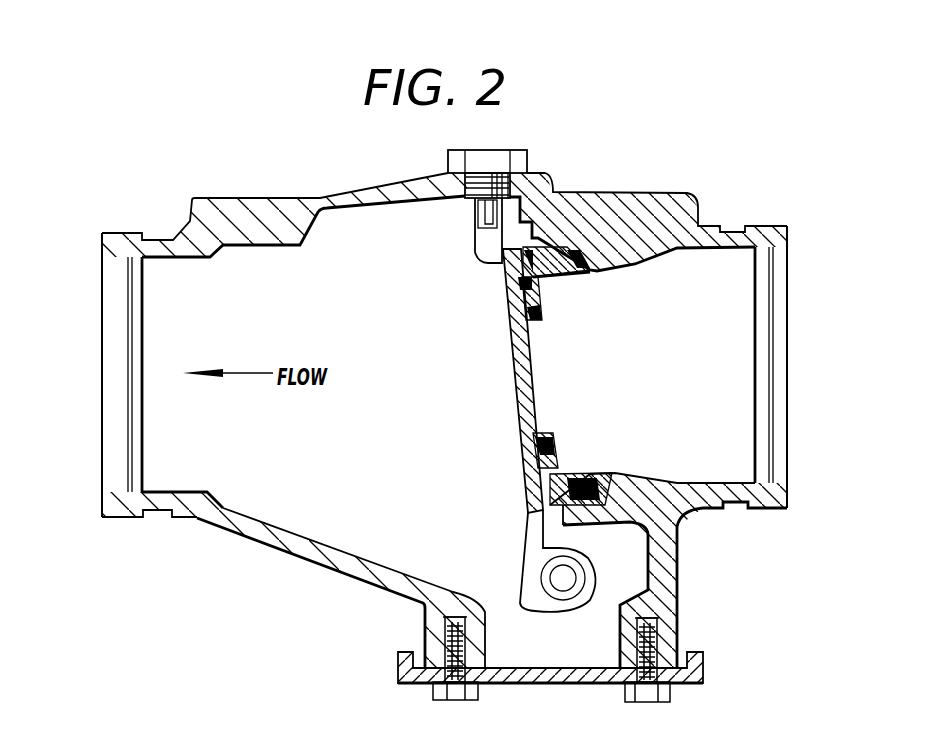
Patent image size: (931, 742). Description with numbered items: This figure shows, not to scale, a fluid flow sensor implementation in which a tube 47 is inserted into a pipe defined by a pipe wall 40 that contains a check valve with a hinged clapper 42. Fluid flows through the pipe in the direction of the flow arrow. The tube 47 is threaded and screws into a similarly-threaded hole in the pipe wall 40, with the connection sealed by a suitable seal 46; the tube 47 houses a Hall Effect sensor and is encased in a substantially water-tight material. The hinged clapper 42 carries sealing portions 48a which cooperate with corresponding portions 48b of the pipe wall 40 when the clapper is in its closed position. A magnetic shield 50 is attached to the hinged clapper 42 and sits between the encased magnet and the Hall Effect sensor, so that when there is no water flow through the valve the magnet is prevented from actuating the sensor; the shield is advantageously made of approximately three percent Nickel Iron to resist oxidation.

The pipe wall 40 is at (243, 210).
The hinged clapper 42 is at (512, 384).
The seal 46 is at (529, 160).
The tube 47 is at (474, 213).
The sealing portions 48a is at (541, 318).
The corresponding portions 48b is at (557, 273).
The magnetic shield 50 is at (478, 259).